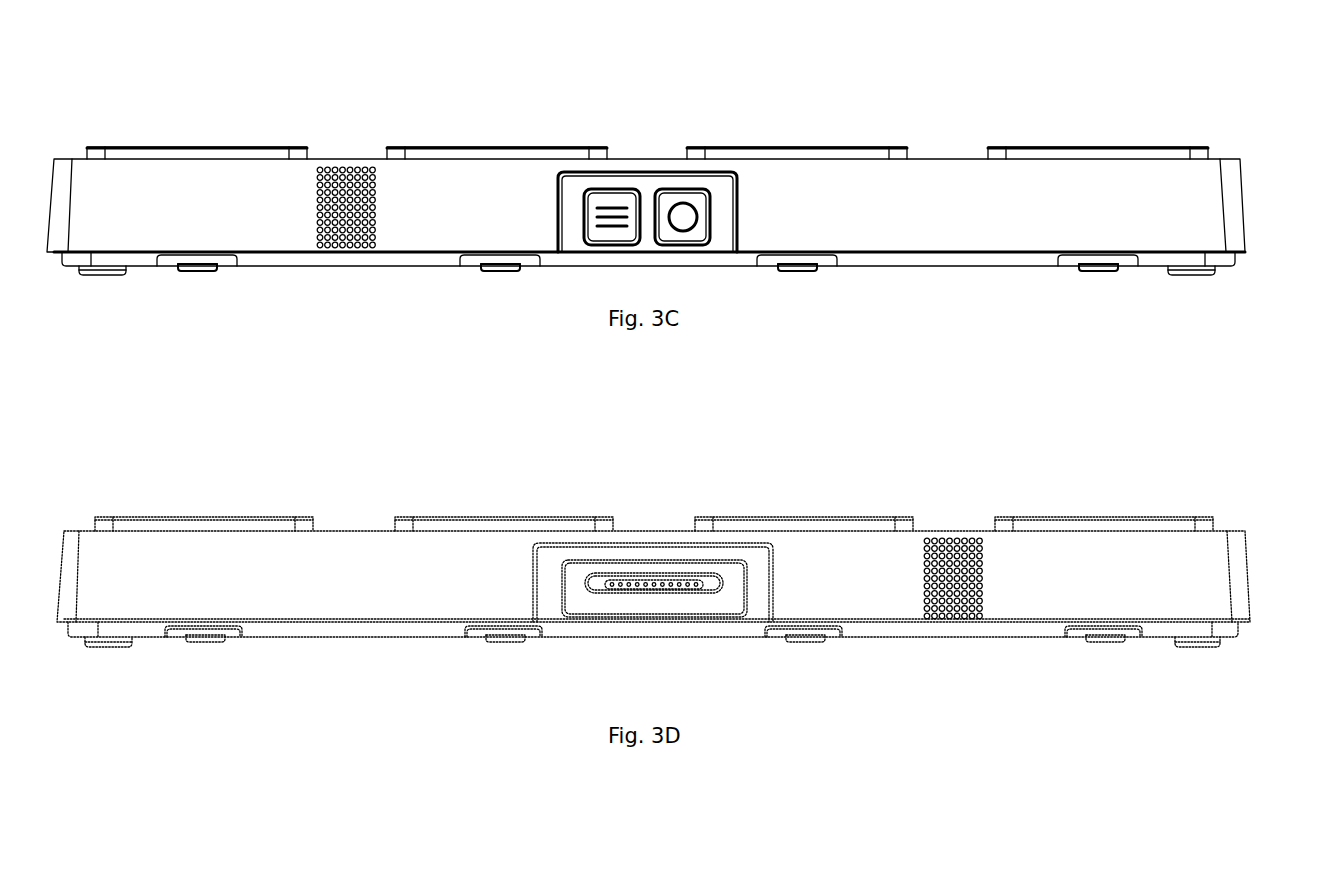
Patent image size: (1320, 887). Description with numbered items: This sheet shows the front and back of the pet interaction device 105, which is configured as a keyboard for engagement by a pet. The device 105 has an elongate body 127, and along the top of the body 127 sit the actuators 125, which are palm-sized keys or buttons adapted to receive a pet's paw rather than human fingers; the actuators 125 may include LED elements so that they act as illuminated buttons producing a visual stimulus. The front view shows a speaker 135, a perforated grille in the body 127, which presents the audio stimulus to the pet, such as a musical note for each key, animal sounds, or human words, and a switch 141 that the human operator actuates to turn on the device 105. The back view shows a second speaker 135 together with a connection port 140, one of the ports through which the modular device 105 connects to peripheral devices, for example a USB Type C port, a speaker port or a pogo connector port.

In FIG. 3C, the pet interaction device 105 is at (1222, 122).
In FIG. 3D, the pet interaction device 105 is at (1202, 455).
In FIG. 3C, the actuators 125 is at (150, 153).
In FIG. 3D, the actuators 125 is at (216, 518).
In FIG. 3C, the elongate body 127 is at (1205, 210).
In FIG. 3D, the elongate body 127 is at (1202, 576).
In FIG. 3C, the speaker 135 is at (357, 238).
In FIG. 3D, the speaker 135 is at (965, 592).
In FIG. 3D, the connection ports 140 is at (598, 603).
In FIG. 3C, the switch 141 is at (596, 243).